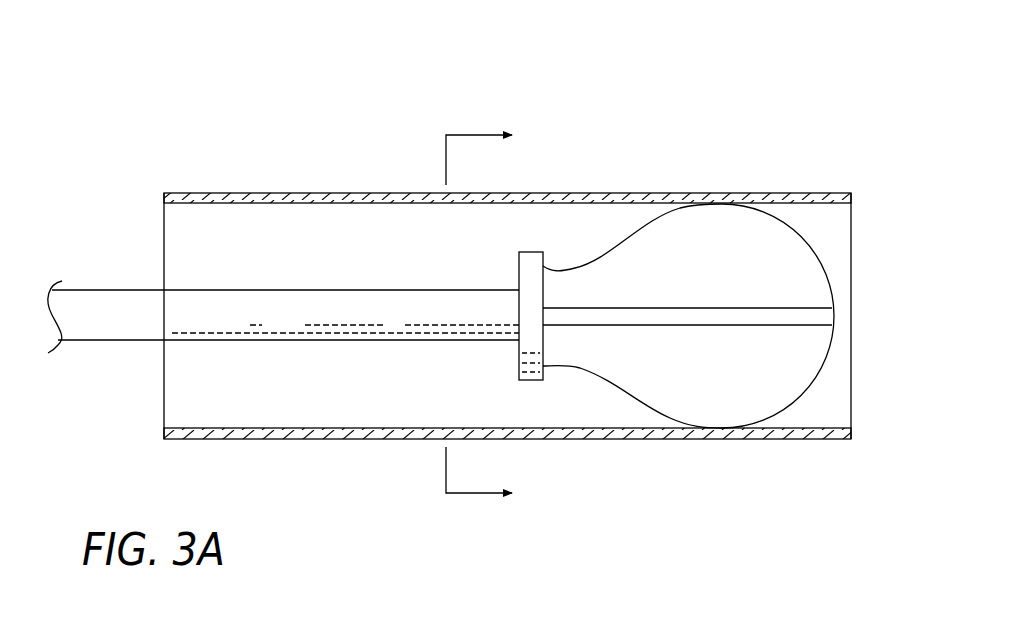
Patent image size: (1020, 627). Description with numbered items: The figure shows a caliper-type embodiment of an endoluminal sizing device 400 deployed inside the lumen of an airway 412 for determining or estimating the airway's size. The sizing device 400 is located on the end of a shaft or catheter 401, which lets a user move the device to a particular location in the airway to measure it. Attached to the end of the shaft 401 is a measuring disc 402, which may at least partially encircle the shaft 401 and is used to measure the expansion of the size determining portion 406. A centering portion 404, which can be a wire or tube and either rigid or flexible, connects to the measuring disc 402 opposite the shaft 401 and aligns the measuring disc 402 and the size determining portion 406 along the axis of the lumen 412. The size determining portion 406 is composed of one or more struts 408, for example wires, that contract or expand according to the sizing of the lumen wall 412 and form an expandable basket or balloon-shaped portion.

The endoluminal sizing device 400 is at (657, 90).
The shaft 401 is at (217, 290).
The measuring disc 402 is at (531, 372).
The centering portion 404 is at (738, 318).
The size determining portion 406 is at (873, 204).
The struts 408 is at (786, 226).
The airway lumen 412 is at (268, 193).